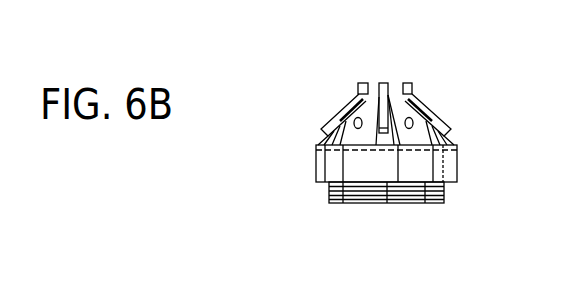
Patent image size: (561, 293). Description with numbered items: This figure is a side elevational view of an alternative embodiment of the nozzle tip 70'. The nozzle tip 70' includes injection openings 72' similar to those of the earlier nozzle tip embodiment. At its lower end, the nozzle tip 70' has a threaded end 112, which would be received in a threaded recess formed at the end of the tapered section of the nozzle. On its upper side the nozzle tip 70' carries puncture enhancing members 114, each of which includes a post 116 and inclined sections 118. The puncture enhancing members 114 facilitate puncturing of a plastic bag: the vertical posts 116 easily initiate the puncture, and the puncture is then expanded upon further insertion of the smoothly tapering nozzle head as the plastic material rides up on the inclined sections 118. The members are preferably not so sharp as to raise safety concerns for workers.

The nozzle tip 70' is at (427, 165).
The injection openings 72' is at (346, 162).
The threaded end 112 is at (430, 205).
The puncture enhancing members 114 is at (440, 118).
The post 116 is at (413, 90).
The inclined sections 118 is at (340, 113).